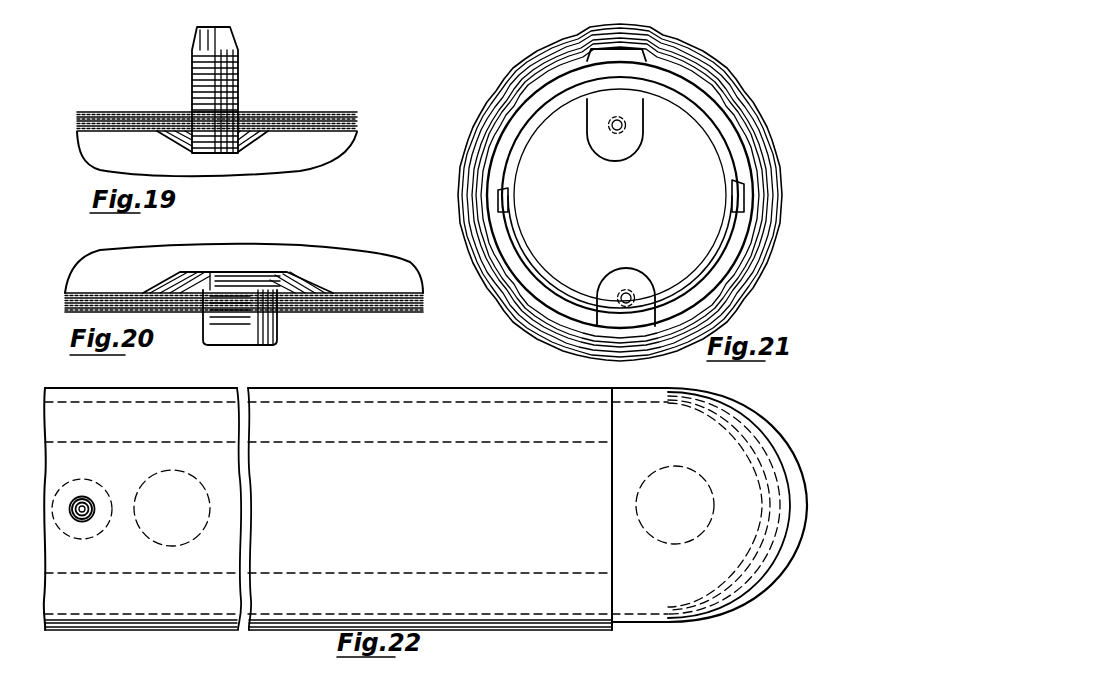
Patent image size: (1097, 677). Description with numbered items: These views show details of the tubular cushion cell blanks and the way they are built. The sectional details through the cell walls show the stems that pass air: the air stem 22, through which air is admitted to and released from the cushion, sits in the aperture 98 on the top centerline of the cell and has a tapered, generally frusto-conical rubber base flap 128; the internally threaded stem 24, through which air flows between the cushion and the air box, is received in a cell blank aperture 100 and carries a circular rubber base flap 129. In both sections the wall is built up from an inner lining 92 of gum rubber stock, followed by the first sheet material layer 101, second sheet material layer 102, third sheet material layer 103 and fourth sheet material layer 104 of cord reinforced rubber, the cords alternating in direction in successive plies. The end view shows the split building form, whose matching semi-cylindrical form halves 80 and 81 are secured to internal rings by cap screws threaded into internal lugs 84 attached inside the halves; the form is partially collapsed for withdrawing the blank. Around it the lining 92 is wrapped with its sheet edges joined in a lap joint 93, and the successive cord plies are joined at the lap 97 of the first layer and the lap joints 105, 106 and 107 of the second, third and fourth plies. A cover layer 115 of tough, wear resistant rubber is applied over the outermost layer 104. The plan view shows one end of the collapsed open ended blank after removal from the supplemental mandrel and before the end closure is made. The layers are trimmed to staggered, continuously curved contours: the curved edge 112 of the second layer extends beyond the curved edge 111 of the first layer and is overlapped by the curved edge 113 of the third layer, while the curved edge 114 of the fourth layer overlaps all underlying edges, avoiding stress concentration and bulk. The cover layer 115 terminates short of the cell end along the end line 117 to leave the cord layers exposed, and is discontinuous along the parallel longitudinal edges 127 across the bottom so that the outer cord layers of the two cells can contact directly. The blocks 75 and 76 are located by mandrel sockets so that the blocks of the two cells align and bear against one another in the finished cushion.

In FIG. 19, the air stem 22 is at (192, 62).
In FIG. 22, the air stem 22 is at (88, 500).
In FIG. 20, the internally threaded stem 24 is at (280, 331).
In FIG. 22, the block 75 is at (187, 472).
In FIG. 22, the block 76 is at (640, 486).
In FIG. 21, the form half 80 is at (526, 151).
In FIG. 21, the form half 81 is at (519, 249).
In FIG. 21, the internal lug 84 is at (632, 136).
In FIG. 19, the lining 92 is at (95, 133).
In FIG. 20, the lining 92 is at (100, 293).
In FIG. 21, the lining 92 is at (495, 154).
In FIG. 21, the lap joint 93 is at (618, 52).
In FIG. 21, the lap 97 is at (514, 96).
In FIG. 19, the aperture 98 is at (196, 114).
In FIG. 20, the cell blank aperture 100 is at (213, 272).
In FIG. 19, the first sheet material layer 101 is at (77, 130).
In FIG. 20, the first sheet material layer 101 is at (65, 293).
In FIG. 21, the first sheet material layer 101 is at (748, 131).
In FIG. 19, the second sheet material layer 102 is at (77, 123).
In FIG. 20, the second sheet material layer 102 is at (65, 300).
In FIG. 21, the second sheet material layer 102 is at (764, 150).
In FIG. 19, the third sheet material layer 103 is at (77, 116).
In FIG. 20, the third sheet material layer 103 is at (65, 308).
In FIG. 21, the third sheet material layer 103 is at (771, 174).
In FIG. 19, the fourth sheet material layer 104 is at (82, 112).
In FIG. 20, the fourth sheet material layer 104 is at (72, 312).
In FIG. 21, the fourth sheet material layer 104 is at (776, 217).
In FIG. 21, the lap joint 105 is at (511, 302).
In FIG. 21, the lap joint 106 is at (720, 319).
In FIG. 21, the lap joint 107 is at (728, 82).
In FIG. 22, the curved edge 111 is at (788, 447).
In FIG. 22, the curved edge 112 is at (771, 434).
In FIG. 22, the curved edge 113 is at (761, 414).
In FIG. 22, the curved edge 114 is at (746, 404).
In FIG. 21, the cover layer 115 is at (535, 60).
In FIG. 22, the cover layer 115 is at (402, 510).
In FIG. 22, the end line 117 is at (612, 548).
In FIG. 22, the cover strip edge 127 is at (468, 442).
In FIG. 19, the rubber base flap 128 is at (250, 143).
In FIG. 22, the rubber base flap 128 is at (112, 525).
In FIG. 20, the rubber base flap 129 is at (315, 281).